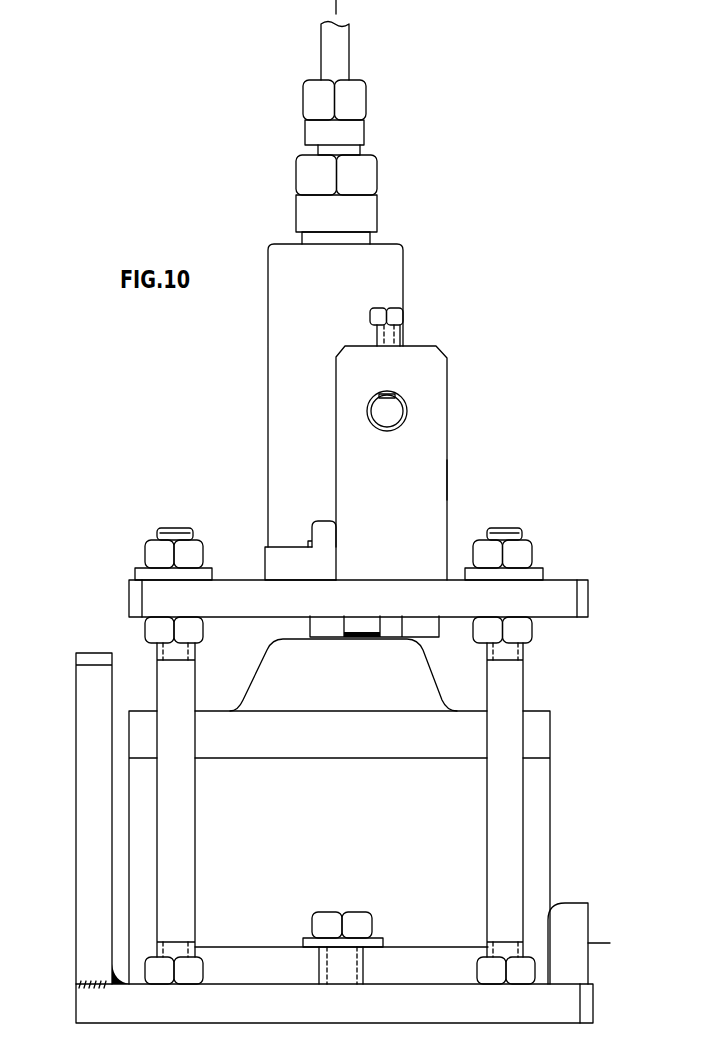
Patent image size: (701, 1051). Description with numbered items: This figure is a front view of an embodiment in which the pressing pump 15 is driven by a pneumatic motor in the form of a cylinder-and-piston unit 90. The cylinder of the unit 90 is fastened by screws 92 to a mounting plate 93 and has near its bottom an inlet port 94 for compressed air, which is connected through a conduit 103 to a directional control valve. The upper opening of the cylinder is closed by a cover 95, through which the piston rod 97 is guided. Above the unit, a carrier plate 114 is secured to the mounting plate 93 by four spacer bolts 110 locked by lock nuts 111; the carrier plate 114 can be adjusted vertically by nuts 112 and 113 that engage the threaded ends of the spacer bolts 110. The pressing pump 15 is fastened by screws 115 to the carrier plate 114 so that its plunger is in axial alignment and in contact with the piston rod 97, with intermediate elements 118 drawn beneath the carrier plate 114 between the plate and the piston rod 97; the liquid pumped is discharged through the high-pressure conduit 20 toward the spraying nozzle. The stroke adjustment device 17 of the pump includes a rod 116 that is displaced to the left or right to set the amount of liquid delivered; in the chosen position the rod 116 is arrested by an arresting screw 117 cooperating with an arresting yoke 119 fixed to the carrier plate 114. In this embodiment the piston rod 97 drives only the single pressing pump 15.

The pressing pump 15 is at (262, 372).
The adjustment device 17 is at (452, 388).
The high-pressure conduit 20 is at (321, 44).
The cylinder-and-piston unit 90 is at (122, 815).
The screws 92 is at (360, 922).
The mounting plate 93 is at (80, 1005).
The inlet port 94 is at (588, 925).
The cover 95 is at (129, 737).
The piston rod 97 is at (330, 632).
The conduit 103 is at (611, 944).
The spacer bolts 110 is at (195, 797).
The lock nuts 111 is at (203, 968).
The nuts 112 is at (145, 632).
The nuts 113 is at (145, 553).
The carrier plate 114 is at (135, 595).
The screws 115 is at (312, 528).
The rod 116 is at (393, 420).
The arresting screw 117 is at (403, 313).
The spacer blocks 118 is at (368, 632).
The arresting yoke 119 is at (447, 478).